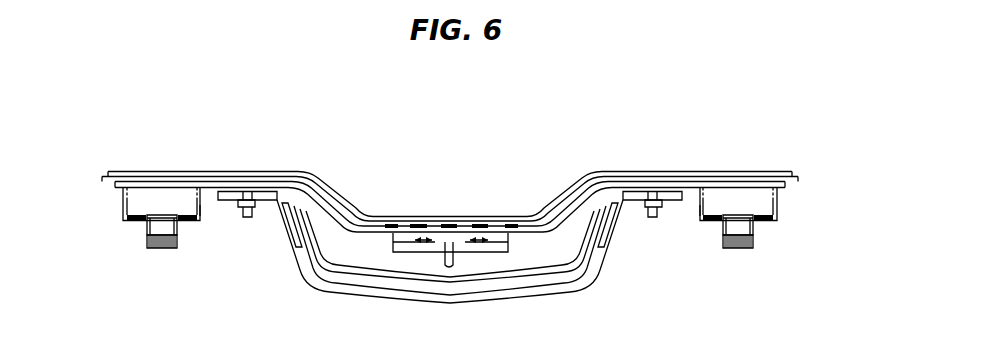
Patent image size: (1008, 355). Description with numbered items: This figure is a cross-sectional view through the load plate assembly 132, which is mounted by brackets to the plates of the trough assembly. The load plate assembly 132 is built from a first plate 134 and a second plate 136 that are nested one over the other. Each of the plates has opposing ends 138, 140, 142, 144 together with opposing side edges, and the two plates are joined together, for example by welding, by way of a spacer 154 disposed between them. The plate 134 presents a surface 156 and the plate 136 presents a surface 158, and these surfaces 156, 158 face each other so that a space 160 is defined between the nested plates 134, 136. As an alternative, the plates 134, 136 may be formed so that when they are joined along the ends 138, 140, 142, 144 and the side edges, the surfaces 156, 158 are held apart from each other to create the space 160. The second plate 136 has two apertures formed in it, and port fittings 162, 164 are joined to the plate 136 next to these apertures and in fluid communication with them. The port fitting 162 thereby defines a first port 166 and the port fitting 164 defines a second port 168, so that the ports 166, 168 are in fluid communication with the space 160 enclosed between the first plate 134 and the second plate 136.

The load plate assembly 132 is at (565, 142).
The first plate 134 is at (790, 171).
The second plate 136 is at (790, 187).
The end of plate 138 is at (94, 158).
The end of plate 140 is at (760, 144).
The end of plate 142 is at (106, 209).
The end of plate 144 is at (793, 212).
The spacer 154 is at (798, 179).
The surface of first plate 156 is at (173, 178).
The surface of second plate 158 is at (233, 189).
The space 160 is at (335, 200).
The port fitting 162 is at (708, 208).
The port fitting 164 is at (202, 209).
The first port 166 is at (733, 249).
The second port 168 is at (157, 250).